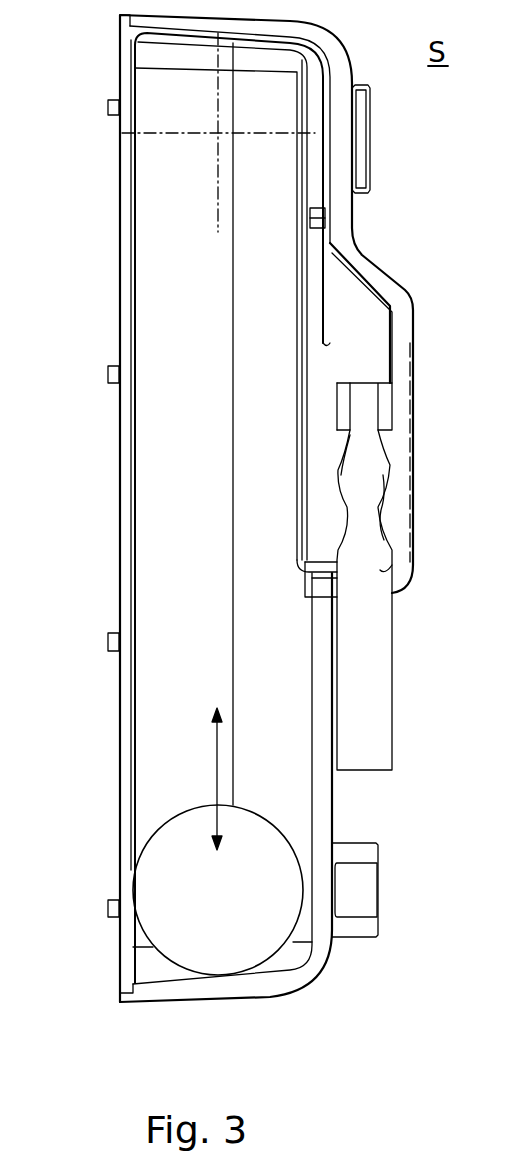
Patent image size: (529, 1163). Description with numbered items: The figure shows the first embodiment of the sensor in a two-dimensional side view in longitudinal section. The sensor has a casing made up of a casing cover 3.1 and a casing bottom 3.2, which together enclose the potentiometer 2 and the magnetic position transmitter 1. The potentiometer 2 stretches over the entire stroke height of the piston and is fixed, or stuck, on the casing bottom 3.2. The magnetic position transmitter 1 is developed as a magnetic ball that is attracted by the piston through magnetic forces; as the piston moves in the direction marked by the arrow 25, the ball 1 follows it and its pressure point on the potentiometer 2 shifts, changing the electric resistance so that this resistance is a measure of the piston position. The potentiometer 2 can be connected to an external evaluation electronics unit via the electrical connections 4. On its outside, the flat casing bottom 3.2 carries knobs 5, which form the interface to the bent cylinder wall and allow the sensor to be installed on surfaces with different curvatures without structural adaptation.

The magnetic position transmitter 1 is at (200, 963).
The potentiometer 2 is at (130, 547).
The casing cover 3.1 is at (270, 1000).
The casing bottom 3.2 is at (118, 737).
The electrical connections 4 is at (392, 697).
The knobs 5 is at (108, 100).
The arrow 25 is at (200, 779).